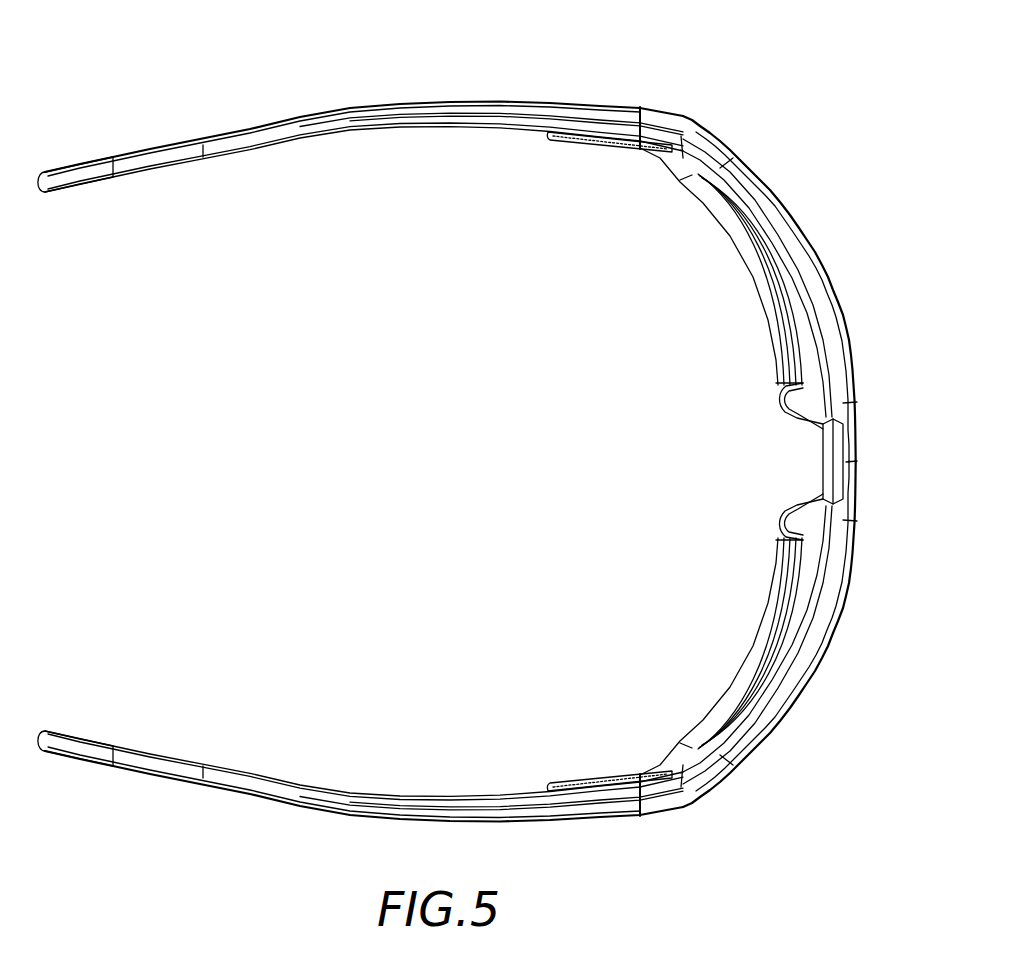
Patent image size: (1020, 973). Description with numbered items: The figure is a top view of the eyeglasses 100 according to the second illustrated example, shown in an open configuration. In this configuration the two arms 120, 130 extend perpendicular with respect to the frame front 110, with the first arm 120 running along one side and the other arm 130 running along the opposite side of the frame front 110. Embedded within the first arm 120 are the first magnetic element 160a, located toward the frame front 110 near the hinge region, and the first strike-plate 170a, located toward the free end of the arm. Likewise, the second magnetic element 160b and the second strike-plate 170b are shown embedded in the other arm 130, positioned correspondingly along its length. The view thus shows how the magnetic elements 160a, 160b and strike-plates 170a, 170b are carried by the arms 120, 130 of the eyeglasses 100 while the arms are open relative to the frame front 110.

The eyeglasses 100 is at (681, 72).
The frame front 110 is at (843, 402).
The first arm 120 is at (268, 128).
The arm 130 is at (276, 802).
The first magnetic element 160a is at (585, 150).
The second magnetic element 160b is at (590, 777).
The first strike-plate 170a is at (115, 163).
The second strike-plate 170b is at (115, 757).